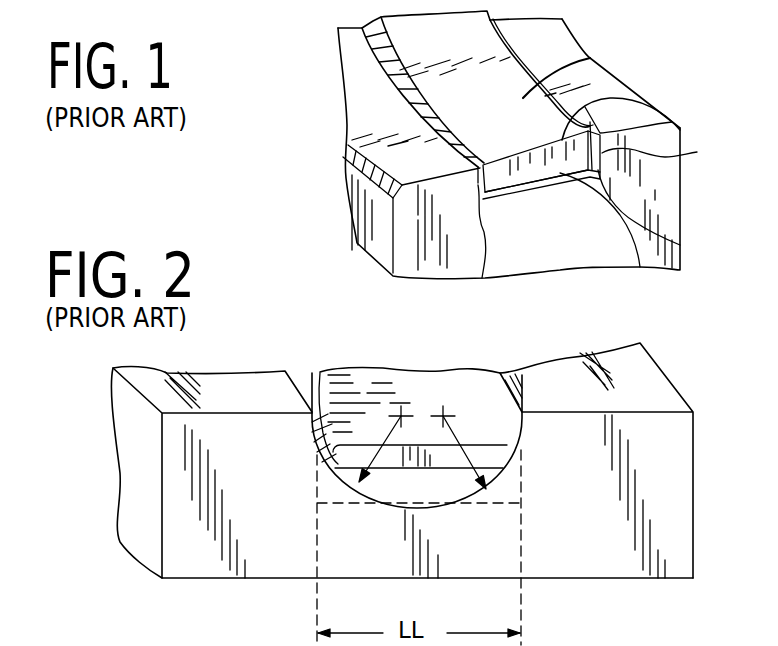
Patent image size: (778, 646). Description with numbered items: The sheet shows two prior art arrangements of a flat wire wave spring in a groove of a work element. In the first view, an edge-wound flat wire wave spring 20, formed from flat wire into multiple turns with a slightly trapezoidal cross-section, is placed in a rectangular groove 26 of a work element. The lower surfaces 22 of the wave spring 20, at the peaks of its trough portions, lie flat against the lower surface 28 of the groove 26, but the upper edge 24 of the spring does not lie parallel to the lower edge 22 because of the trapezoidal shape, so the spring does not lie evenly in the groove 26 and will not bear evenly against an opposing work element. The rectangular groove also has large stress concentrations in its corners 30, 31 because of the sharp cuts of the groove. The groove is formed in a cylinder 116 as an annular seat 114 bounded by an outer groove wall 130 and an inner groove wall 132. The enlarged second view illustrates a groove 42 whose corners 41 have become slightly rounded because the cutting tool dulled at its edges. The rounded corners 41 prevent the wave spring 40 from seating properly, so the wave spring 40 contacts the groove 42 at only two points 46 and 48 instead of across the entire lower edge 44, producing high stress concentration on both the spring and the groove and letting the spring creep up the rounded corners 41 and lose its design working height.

In FIG. 1, the flat wire wave spring 20 is at (590, 58).
In FIG. 1, the upper edge 24 is at (641, 98).
In FIG. 1, the inner groove wall 132 is at (671, 152).
In FIG. 1, the cylinder 116 is at (667, 202).
In FIG. 1, the corner 30 is at (680, 245).
In FIG. 1, the outer groove wall 130 is at (483, 167).
In FIG. 1, the corner 31 is at (479, 196).
In FIG. 1, the lower surface 22 is at (533, 187).
In FIG. 1, the lower surface of the groove 28 is at (560, 174).
In FIG. 1, the rectangular groove 26 is at (482, 278).
In FIG. 1, the annular seat 114 is at (640, 267).
In FIG. 2, the wave spring 40 is at (476, 430).
In FIG. 2, the contact point 46 is at (503, 468).
In FIG. 2, the contact point 48 is at (335, 462).
In FIG. 2, the lower edge 44 is at (388, 470).
In FIG. 2, the rounded corners 41 is at (349, 488).
In FIG. 2, the groove 42 is at (442, 508).